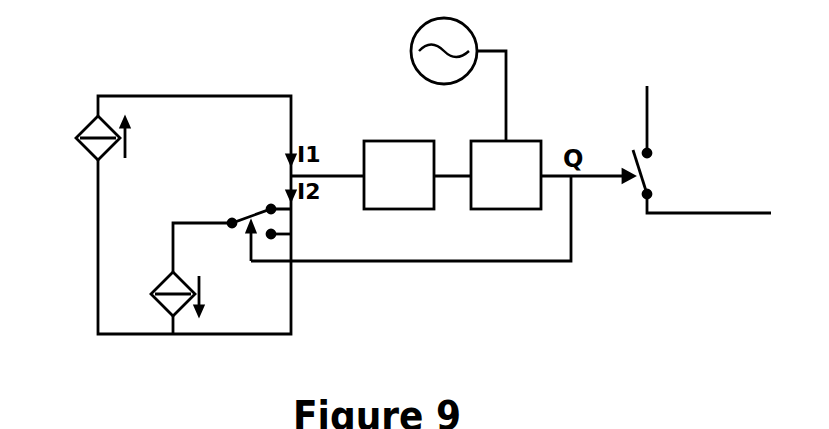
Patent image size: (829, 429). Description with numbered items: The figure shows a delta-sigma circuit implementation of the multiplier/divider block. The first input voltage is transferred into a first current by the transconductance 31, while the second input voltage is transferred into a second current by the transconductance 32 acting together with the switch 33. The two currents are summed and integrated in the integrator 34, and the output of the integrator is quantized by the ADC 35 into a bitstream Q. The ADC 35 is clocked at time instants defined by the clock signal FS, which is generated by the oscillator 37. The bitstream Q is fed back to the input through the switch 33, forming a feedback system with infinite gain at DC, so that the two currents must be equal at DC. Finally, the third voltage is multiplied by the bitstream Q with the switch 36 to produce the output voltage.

The transconductance 31 is at (119, 138).
The transconductance 32 is at (196, 290).
The switch 33 is at (372, 223).
The integrator 34 is at (417, 192).
The ADC 35 is at (552, 192).
The switch 36 is at (702, 149).
The oscillator 37 is at (463, 79).